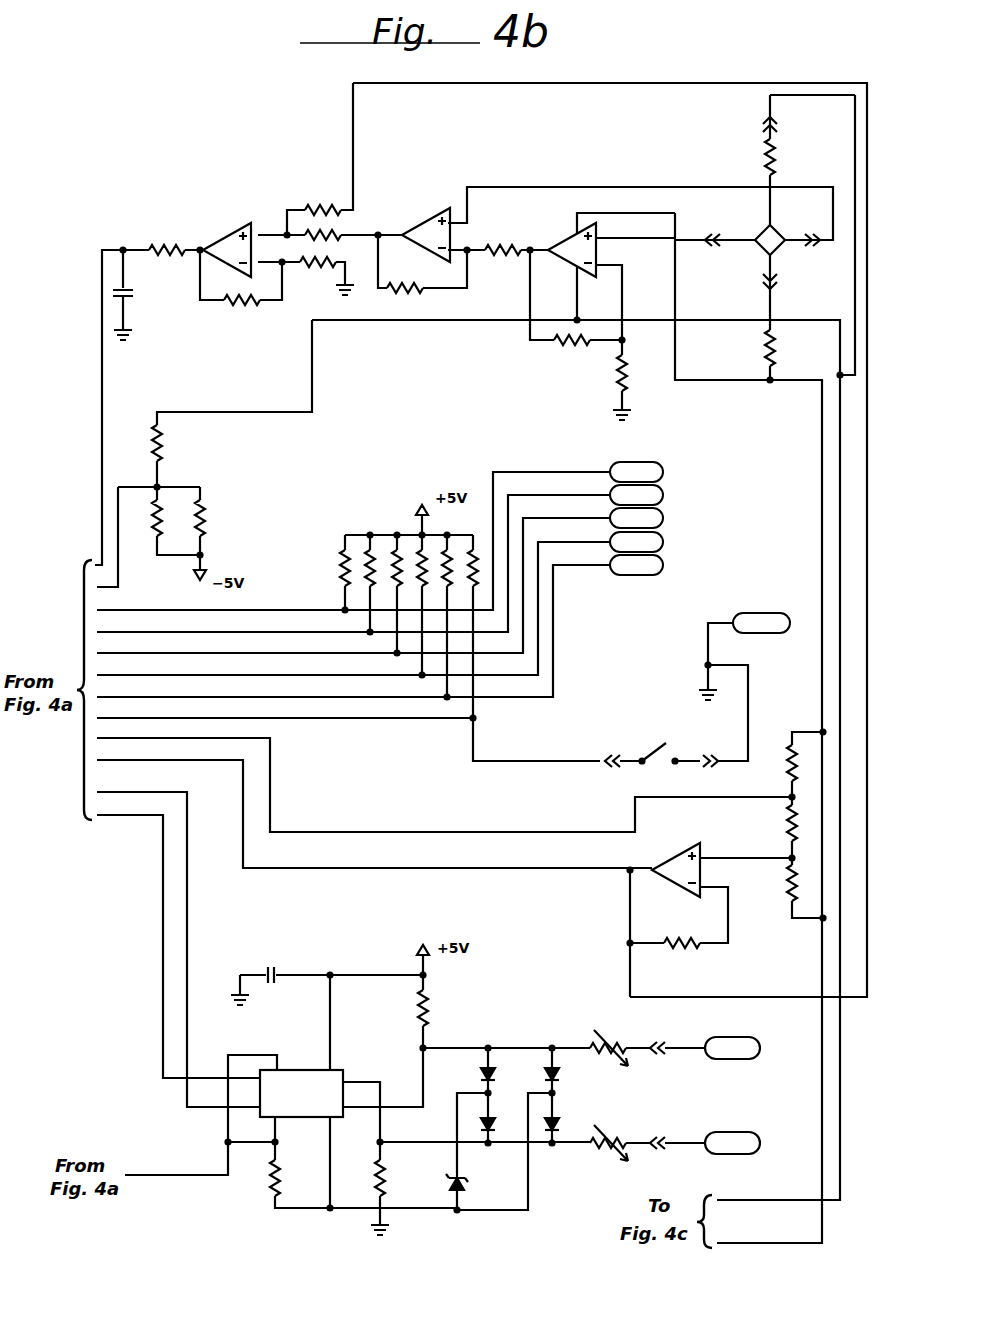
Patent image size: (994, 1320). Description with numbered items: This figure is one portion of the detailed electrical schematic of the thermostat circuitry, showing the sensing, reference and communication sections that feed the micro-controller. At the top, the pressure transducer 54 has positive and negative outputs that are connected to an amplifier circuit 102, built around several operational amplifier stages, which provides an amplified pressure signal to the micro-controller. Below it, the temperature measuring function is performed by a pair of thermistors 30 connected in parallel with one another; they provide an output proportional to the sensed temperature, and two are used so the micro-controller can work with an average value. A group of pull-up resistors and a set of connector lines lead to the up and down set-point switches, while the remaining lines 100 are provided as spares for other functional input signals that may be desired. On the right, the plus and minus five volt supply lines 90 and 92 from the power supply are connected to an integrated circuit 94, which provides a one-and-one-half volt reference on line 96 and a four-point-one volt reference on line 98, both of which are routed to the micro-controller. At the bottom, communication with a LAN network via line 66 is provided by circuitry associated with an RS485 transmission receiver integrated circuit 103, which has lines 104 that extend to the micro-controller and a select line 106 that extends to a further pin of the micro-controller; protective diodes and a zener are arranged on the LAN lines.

The amplifier circuit 102 is at (498, 166).
The pressure transducer 54 is at (783, 238).
The thermistors 30 is at (200, 512).
The spare lines 100 is at (563, 568).
The reference voltage line 98 is at (270, 752).
The reference voltage line 96 is at (250, 868).
The lines 104 is at (163, 843).
The integrated circuit 94 is at (670, 886).
The RS485 transmission receiver integrated circuit 103 is at (310, 1069).
The select line 106 is at (150, 1175).
The LAN line 66 is at (383, 1218).
The plus 5 volt line 90 is at (728, 1200).
The minus 5 volt line 92 is at (742, 1243).